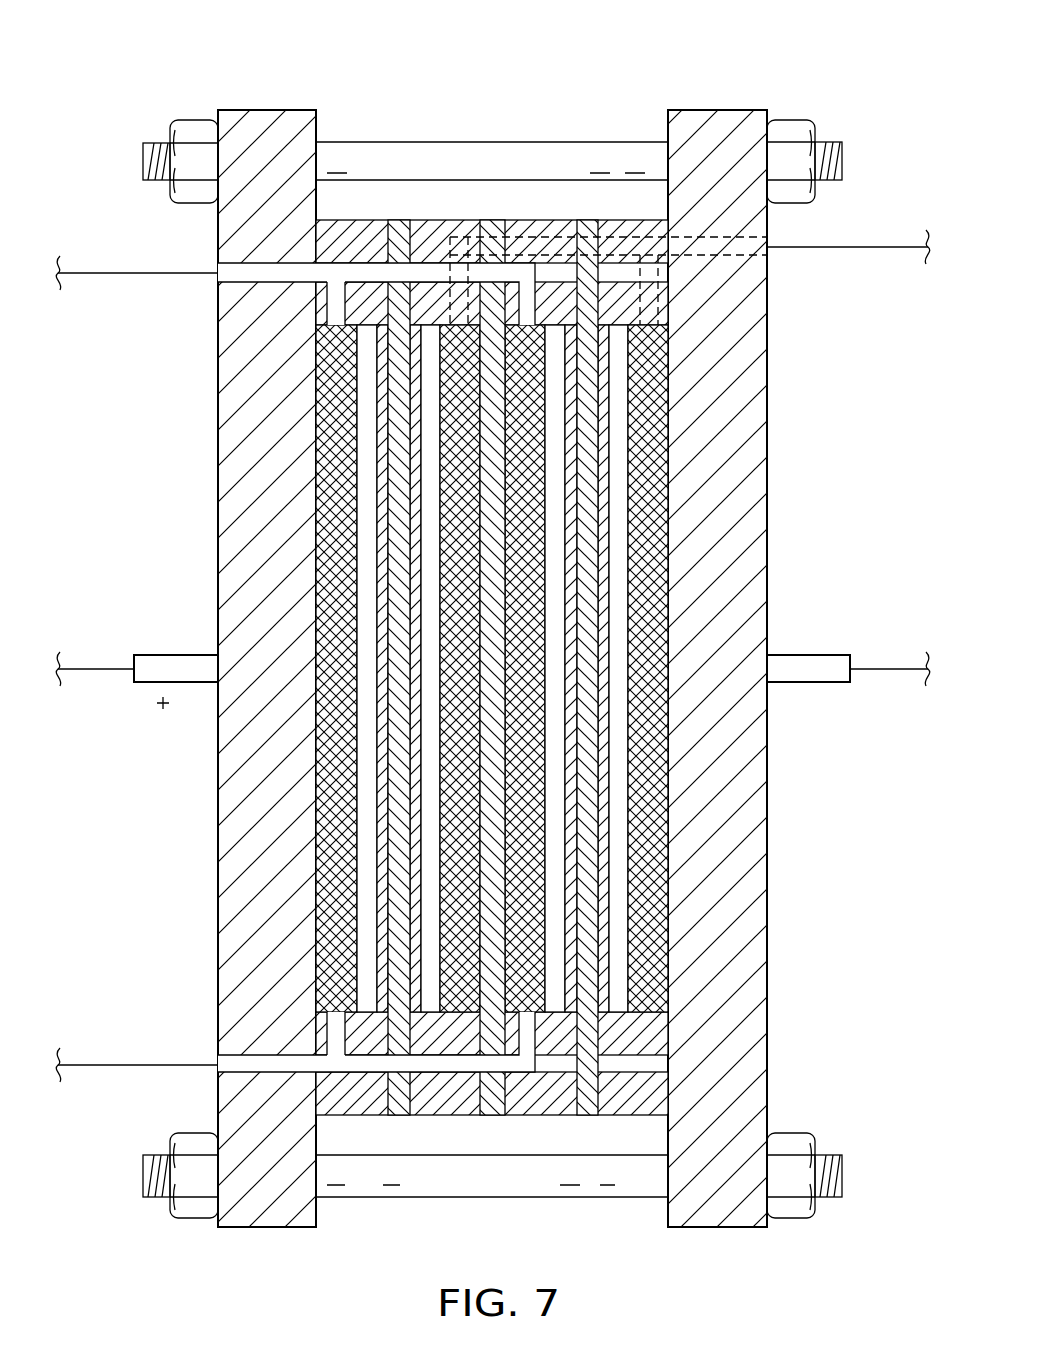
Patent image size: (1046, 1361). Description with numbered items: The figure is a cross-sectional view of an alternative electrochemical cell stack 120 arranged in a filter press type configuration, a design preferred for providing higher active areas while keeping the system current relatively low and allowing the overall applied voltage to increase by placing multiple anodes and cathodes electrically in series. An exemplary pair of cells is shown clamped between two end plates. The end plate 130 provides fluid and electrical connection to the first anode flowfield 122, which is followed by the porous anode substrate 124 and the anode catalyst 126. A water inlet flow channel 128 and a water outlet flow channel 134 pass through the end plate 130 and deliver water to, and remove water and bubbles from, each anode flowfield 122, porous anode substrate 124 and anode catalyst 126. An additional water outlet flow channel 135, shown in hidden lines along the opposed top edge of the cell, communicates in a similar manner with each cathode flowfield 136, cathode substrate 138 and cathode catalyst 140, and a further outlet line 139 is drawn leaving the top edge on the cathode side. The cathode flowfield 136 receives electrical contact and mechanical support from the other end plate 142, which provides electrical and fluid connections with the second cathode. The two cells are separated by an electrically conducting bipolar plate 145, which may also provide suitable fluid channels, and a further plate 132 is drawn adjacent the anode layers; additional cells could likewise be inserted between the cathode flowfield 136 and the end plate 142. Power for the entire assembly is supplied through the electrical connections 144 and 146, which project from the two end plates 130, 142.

The electrochemical cell stack 120 is at (118, 54).
The anode flowfield 122 is at (332, 542).
The porous anode substrate 124 is at (367, 498).
The anode catalyst 126 is at (378, 452).
The water inlet flow channel 128 is at (268, 1062).
The end plate 130 is at (248, 585).
The bipolar plate 132 is at (393, 397).
The water outlet flow channel 134 is at (255, 277).
The additional water outlet flow channel 135 is at (707, 256).
The cathode flowfield 136 is at (660, 472).
The cathode substrate 138 is at (620, 438).
The fluid outlet line 139 is at (815, 247).
The cathode catalyst 140 is at (593, 400).
The end plate 142 is at (768, 503).
The electrical connection 144 is at (193, 655).
The bipolar plate 145 is at (493, 605).
The electrical connection 146 is at (806, 655).